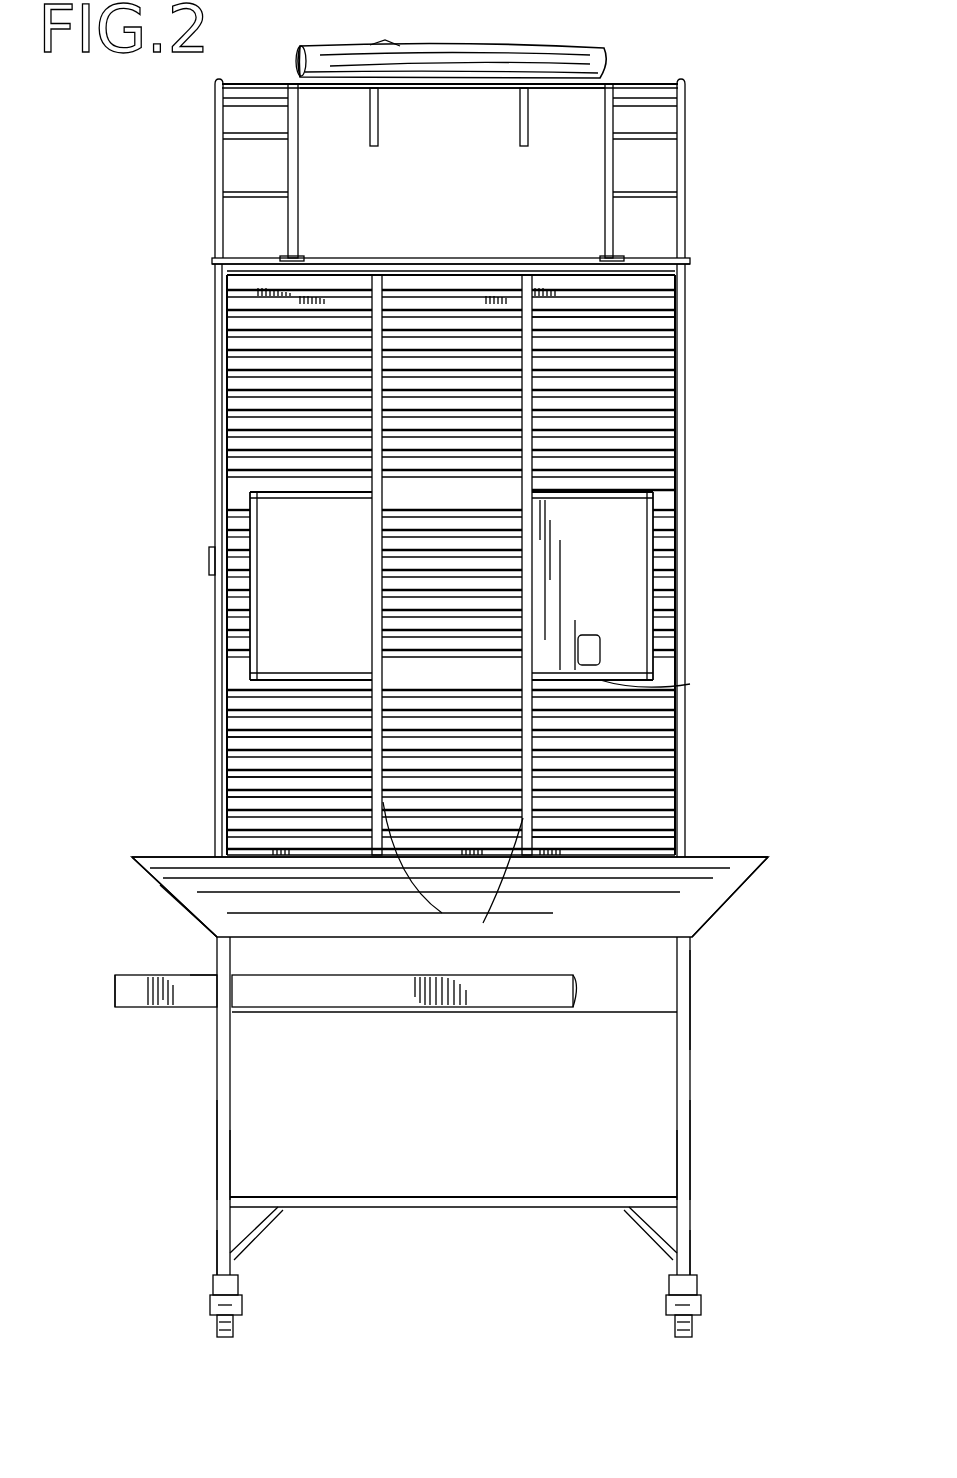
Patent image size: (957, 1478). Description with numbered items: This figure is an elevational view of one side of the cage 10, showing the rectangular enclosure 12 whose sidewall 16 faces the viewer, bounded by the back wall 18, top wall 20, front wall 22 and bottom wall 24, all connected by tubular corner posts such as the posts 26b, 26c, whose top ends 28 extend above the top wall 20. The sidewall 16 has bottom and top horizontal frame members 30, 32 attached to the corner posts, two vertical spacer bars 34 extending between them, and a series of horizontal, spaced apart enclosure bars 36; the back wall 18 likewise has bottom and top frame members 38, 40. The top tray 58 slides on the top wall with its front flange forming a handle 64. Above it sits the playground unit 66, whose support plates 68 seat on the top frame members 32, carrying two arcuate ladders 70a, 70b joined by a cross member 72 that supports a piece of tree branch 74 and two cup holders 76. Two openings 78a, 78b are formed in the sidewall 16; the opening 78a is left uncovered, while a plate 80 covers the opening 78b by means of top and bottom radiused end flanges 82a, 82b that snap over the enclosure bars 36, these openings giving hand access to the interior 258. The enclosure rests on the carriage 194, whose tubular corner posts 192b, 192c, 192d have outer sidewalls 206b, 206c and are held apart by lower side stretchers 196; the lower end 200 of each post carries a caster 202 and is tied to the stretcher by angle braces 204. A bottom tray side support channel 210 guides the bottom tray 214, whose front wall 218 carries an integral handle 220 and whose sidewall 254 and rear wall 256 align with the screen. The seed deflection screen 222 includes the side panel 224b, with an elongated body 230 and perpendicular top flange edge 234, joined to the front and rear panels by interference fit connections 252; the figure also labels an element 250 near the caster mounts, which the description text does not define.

The cage 10 is at (697, 220).
The enclosure 12 is at (215, 340).
The sidewall 16 is at (660, 432).
The back wall 18 is at (690, 504).
The top wall 20 is at (660, 326).
The front wall 22 is at (240, 736).
The bottom wall 24 is at (660, 842).
The corner post 26b is at (217, 448).
The corner post 26c is at (690, 616).
The top ends 28 is at (215, 262).
The bottom horizontal frame member 30 is at (632, 840).
The top horizontal frame member 32 is at (455, 270).
The sidewall spacer bars 34 is at (645, 603).
The sidewall enclosure bars 36 is at (246, 818).
The back wall bottom frame member 38 is at (690, 848).
The back wall top frame member 40 is at (690, 268).
The top tray 58 is at (260, 290).
The handle 64 is at (228, 283).
The playground unit 66 is at (652, 79).
The support plates 68 is at (268, 256).
The arcuate shaped ladder 70a is at (223, 122).
The arcuate shaped ladder 70b is at (685, 126).
The cross member 72 is at (446, 88).
The tree branch 74 is at (553, 50).
The cup holders 76 is at (520, 146).
The opening 78a is at (336, 569).
The opening 78b is at (640, 566).
The plate 80 is at (610, 552).
The top radiused end flange 82a is at (635, 490).
The bottom radiused end flange 82b is at (690, 684).
The carriage corner post 192b is at (217, 1134).
The carriage corner post 192c is at (680, 1116).
The carriage corner post 192d is at (748, 1000).
The carriage 194 is at (692, 1079).
The lower side stretcher 196 is at (432, 1190).
The lower end 200 is at (228, 1232).
The caster 202 is at (234, 1325).
The angle braces 204 is at (270, 1232).
The outer sidewall 206b is at (222, 1164).
The outer sidewall 206c is at (690, 1162).
The bottom tray side support channel 210 is at (348, 1012).
The bottom tray 214 is at (148, 1010).
The front wall 218 is at (115, 997).
The handle 220 is at (112, 975).
The seed deflection screen 222 is at (710, 884).
The side panel 224b is at (200, 912).
The elongated body 230 is at (620, 928).
The top flange edge 234 is at (160, 862).
The leveler 250 is at (212, 1290).
The interference fit connections 252 is at (182, 882).
The sidewall 254 is at (197, 992).
The rear wall 256 is at (577, 990).
The interior 258 is at (260, 610).